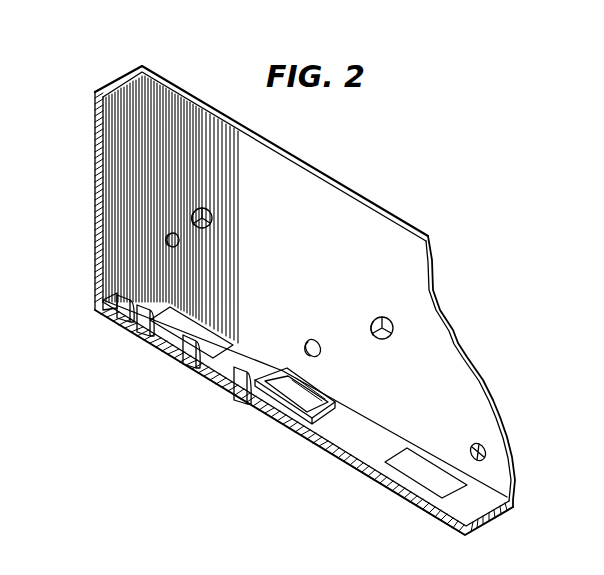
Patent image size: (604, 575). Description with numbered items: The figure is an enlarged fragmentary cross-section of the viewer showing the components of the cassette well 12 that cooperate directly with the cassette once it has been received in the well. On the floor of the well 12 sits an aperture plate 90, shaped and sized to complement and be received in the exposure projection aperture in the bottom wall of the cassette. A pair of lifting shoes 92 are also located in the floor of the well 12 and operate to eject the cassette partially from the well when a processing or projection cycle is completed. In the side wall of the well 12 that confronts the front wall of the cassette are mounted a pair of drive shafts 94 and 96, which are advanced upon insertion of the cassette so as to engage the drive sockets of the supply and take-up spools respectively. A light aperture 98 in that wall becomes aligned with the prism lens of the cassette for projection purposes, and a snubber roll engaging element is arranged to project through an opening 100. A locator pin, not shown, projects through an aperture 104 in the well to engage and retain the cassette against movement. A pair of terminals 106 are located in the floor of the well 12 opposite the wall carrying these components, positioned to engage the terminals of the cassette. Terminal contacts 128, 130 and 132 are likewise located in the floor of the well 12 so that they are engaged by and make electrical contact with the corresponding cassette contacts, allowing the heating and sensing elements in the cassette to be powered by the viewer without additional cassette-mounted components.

The well 12 is at (157, 82).
The aperture plate 90 is at (313, 405).
The lifting shoes 92 is at (200, 335).
The drive shaft 94 is at (395, 318).
The drive shaft 96 is at (210, 210).
The light aperture 98 is at (310, 340).
The opening 100 is at (472, 448).
The aperture 104 is at (180, 244).
The terminals 106 is at (245, 384).
The terminal contact 128 is at (182, 357).
The terminal contact 130 is at (140, 322).
The terminal contact 132 is at (105, 309).